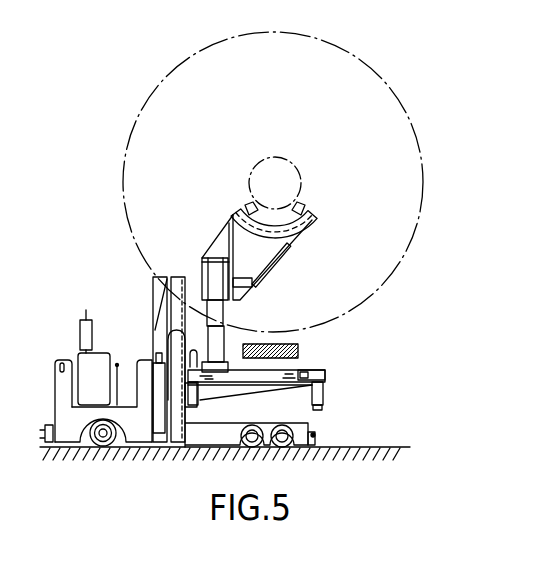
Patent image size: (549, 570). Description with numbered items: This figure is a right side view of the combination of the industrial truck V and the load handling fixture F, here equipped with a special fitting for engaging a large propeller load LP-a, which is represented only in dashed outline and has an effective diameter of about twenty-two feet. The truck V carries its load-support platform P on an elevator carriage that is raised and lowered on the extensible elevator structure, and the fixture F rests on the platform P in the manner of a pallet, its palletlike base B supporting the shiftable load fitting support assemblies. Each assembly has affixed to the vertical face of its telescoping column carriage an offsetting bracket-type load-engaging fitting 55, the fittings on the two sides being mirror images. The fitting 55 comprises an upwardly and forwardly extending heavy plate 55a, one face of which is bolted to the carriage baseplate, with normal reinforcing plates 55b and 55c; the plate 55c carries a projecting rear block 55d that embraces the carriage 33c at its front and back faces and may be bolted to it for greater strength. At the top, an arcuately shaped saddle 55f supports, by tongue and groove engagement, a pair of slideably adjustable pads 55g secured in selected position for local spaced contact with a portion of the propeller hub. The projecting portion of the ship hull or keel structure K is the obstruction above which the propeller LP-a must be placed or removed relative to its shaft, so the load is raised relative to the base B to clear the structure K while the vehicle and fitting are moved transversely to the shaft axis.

The propeller load LP-a is at (421, 151).
The load-engaging and manipulating fixture F is at (170, 269).
The high-lift platform industrial truck V is at (105, 337).
The carriage 33c is at (215, 267).
The bracket-type load-engaging fitting 55 is at (257, 247).
The heavy plate 55a is at (298, 245).
The reinforcing plate 55b is at (277, 270).
The reinforcing plate 55c is at (262, 287).
The projecting rear block 55d is at (197, 265).
The saddle 55f is at (312, 217).
The slideably adjustable pads 55g is at (247, 212).
The projecting portion of ship hull or keel structure K is at (300, 349).
The palletlike base B is at (326, 378).
The truck load-support platform P is at (287, 395).